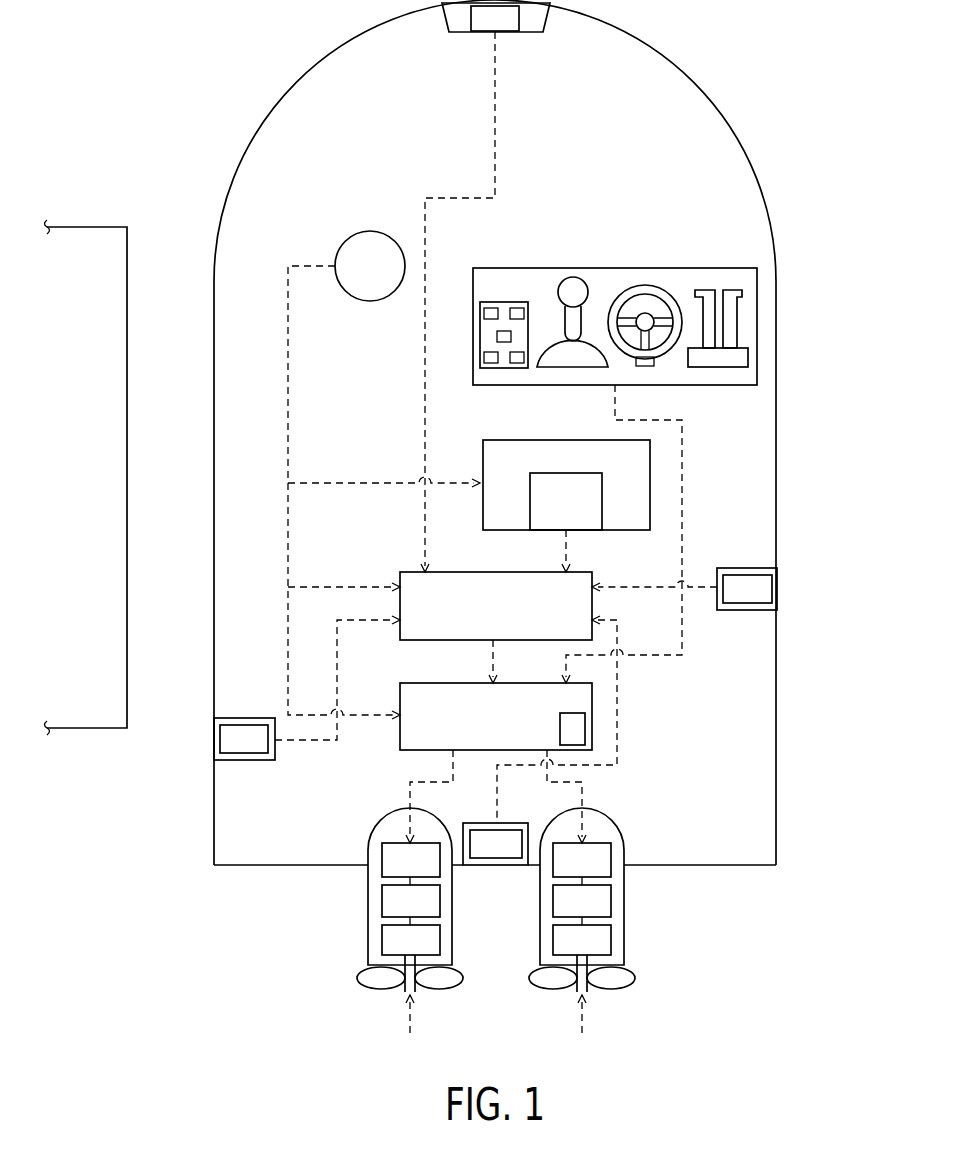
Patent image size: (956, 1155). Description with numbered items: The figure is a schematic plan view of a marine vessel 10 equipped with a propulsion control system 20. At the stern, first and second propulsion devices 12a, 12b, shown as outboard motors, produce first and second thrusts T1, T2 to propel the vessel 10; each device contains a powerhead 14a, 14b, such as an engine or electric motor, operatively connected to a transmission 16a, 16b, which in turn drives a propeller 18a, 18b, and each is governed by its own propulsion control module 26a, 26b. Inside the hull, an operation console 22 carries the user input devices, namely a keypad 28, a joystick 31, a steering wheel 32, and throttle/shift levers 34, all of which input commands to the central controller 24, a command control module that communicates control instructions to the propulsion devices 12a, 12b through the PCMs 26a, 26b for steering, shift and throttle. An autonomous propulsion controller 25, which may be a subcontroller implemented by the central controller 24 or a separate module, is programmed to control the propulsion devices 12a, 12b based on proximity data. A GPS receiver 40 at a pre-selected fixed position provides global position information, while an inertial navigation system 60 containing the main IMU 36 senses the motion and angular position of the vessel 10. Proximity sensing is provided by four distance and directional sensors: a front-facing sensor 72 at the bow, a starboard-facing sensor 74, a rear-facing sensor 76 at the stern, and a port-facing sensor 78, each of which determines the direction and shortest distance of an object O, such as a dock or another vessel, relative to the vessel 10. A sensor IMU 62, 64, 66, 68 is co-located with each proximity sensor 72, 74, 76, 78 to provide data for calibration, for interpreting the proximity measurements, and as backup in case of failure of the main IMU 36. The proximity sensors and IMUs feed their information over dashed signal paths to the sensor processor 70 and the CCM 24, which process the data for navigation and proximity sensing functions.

The marine vessel 10 is at (755, 175).
The propulsion control system 20 is at (664, 118).
The operation console 22 is at (578, 268).
The central controller 24 is at (592, 707).
The autonomous propulsion controller 25 is at (585, 742).
The keypad 28 is at (498, 302).
The joystick 31 is at (582, 320).
The steering wheel 32 is at (643, 286).
The throttle/shift levers 34 is at (735, 290).
The main inertial measurement unit 36 is at (565, 473).
The GPS receiver 40 is at (348, 238).
The inertial navigation system 60 is at (503, 440).
The sensor IMU 62 is at (507, 32).
The sensor IMU 64 is at (735, 575).
The sensor IMU 66 is at (510, 830).
The sensor IMU 68 is at (232, 753).
The sensor processor 70 is at (498, 572).
The front-facing proximity sensor 72 is at (527, 22).
The starboard-facing proximity sensor 74 is at (763, 568).
The rear-facing proximity sensor 76 is at (493, 866).
The port-facing proximity sensor 78 is at (228, 718).
The first propulsion device 12a is at (393, 812).
The second propulsion device 12b is at (600, 812).
The powerhead 14a is at (382, 900).
The powerhead 14b is at (611, 900).
The transmission 16a is at (382, 940).
The transmission 16b is at (611, 940).
The propeller 18a is at (358, 977).
The propeller 18b is at (635, 977).
The propulsion control module 26a is at (393, 843).
The propulsion control module 26b is at (597, 843).
The first thrust T1 is at (412, 1018).
The second thrust T2 is at (584, 1018).
The object O is at (89, 488).